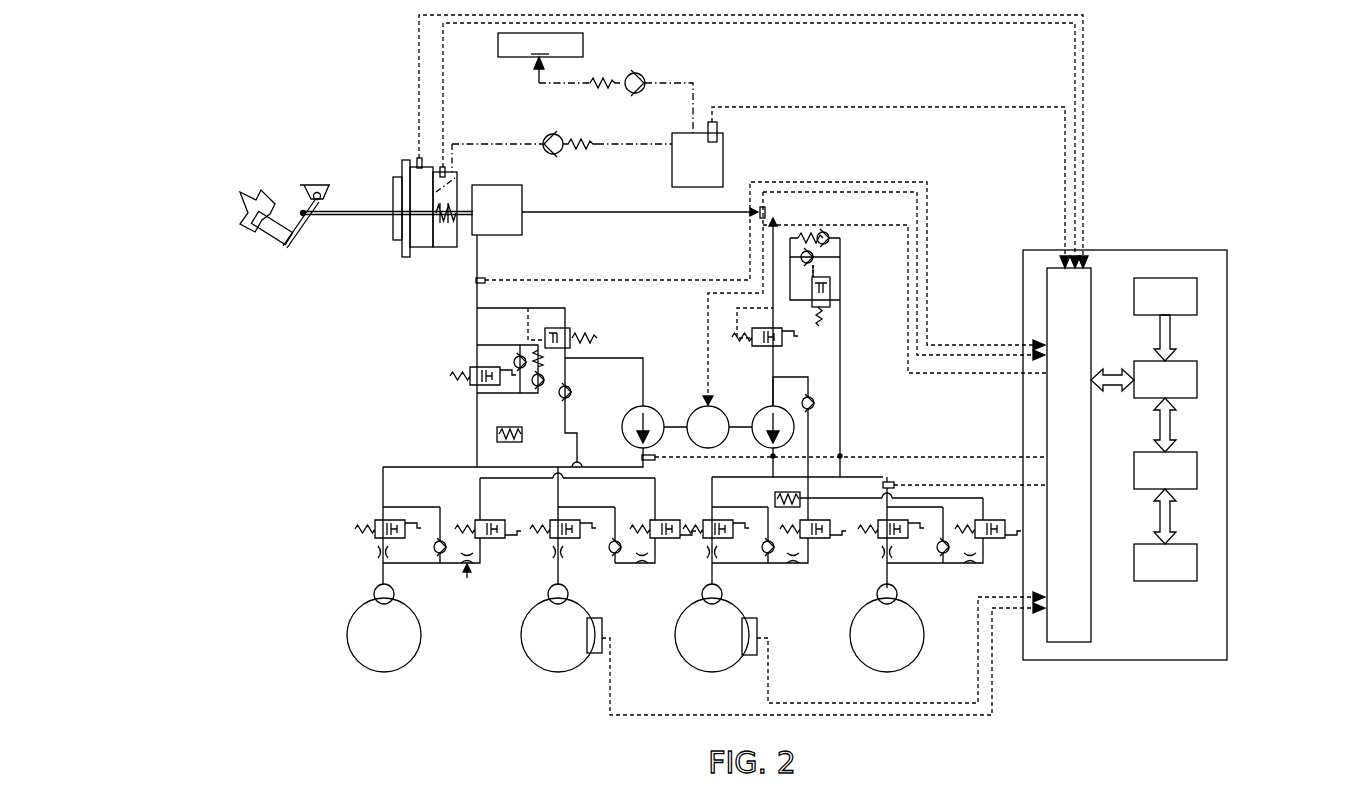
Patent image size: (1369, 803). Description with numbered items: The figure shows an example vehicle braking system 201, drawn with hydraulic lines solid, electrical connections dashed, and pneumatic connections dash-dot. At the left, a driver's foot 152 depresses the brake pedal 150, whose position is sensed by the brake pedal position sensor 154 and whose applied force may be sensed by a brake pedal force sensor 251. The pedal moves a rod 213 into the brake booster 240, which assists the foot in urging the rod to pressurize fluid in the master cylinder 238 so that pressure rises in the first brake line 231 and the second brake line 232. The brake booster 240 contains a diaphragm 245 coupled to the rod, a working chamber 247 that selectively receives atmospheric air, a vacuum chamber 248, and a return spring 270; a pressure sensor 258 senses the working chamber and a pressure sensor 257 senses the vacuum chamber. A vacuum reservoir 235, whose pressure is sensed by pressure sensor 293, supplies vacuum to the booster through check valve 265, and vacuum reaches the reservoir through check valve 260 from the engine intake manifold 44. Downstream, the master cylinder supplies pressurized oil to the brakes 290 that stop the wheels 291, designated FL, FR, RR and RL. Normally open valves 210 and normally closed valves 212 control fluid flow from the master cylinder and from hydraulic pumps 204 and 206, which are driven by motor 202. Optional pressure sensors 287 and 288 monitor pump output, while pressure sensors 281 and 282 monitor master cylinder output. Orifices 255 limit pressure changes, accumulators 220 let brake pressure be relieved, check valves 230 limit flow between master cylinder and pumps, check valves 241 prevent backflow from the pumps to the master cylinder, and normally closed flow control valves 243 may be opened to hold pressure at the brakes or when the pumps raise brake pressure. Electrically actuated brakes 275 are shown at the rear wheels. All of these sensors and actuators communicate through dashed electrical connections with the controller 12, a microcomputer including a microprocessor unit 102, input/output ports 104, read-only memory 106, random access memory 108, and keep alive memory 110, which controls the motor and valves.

The controller 12 is at (1213, 248).
The intake manifold 44 is at (540, 58).
The microprocessor unit 102 is at (1198, 380).
The input/output ports 104 is at (1090, 275).
The read-only memory 106 is at (1198, 294).
The random access memory 108 is at (1198, 468).
The keep alive memory 110 is at (1198, 560).
The brake pedal 150 is at (290, 240).
The foot 152 is at (250, 213).
The brake pedal position sensor 154 is at (332, 186).
The braking system 201 is at (1152, 26).
The motor 202 is at (704, 401).
The hydraulic pump 204 is at (657, 408).
The hydraulic pump 206 is at (758, 410).
The normally open valves 210 is at (378, 518).
The normally closed valves 212 is at (472, 518).
The rod 213 is at (365, 211).
The accumulators 220 is at (523, 438).
The check valves 230 is at (571, 396).
The first brake line 231 is at (477, 306).
The second brake line 232 is at (548, 213).
The vacuum reservoir 235 is at (672, 180).
The master cylinder 238 is at (480, 185).
The brake booster 240 is at (398, 242).
The check valves 241 is at (832, 236).
The normally closed flow control valves 243 is at (812, 303).
The diaphragm 245 is at (452, 178).
The working chamber 247 is at (415, 248).
The vacuum chamber 248 is at (440, 248).
The brake pedal force sensor 251 is at (283, 250).
The orifices 255 is at (467, 578).
The pressure sensor 257 is at (444, 165).
The pressure sensor 258 is at (417, 157).
The check valve 260 is at (632, 93).
The check valve 265 is at (556, 154).
The return spring 270 is at (444, 242).
The electrically actuated brakes 275 is at (598, 618).
The pressure sensor 281 is at (487, 280).
The pressure sensor 282 is at (767, 207).
The pressure sensor 287 is at (652, 461).
The pressure sensor 288 is at (882, 485).
The brakes 290 is at (375, 589).
The wheels 291 is at (356, 660).
The pressure sensor 293 is at (717, 127).